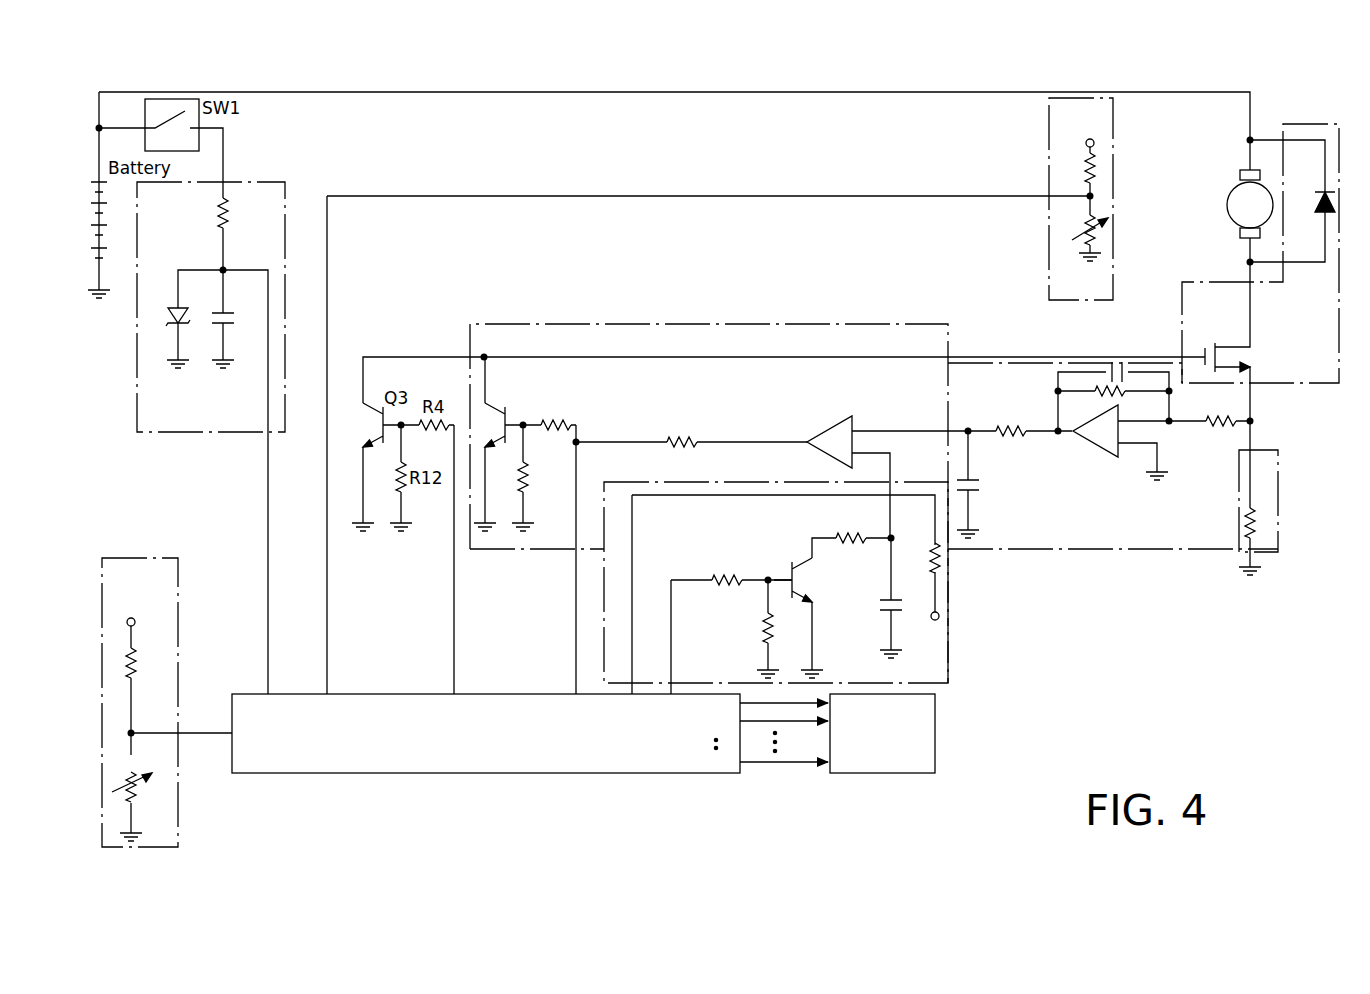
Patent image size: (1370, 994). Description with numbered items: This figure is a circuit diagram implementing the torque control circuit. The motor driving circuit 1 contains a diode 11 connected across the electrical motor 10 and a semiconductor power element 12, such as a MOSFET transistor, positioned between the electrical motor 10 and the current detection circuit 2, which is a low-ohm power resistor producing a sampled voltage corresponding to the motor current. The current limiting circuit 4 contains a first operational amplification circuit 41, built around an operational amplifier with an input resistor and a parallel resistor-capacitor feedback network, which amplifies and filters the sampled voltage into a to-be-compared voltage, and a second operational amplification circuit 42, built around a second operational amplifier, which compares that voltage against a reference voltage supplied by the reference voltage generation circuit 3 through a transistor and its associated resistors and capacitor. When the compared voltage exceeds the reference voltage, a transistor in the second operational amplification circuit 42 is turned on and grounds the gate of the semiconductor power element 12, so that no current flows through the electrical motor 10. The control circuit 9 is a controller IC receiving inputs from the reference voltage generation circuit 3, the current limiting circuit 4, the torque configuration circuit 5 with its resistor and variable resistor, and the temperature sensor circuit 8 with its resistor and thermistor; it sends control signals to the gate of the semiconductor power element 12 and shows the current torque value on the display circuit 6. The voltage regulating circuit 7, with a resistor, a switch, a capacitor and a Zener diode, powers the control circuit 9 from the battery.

The motor driving circuit 1 is at (1282, 372).
The current detection circuit 2 is at (1272, 468).
The reference voltage generation circuit 3 is at (932, 676).
The current limiting circuit 4 is at (967, 282).
The first operational amplification circuit 41 is at (1008, 383).
The second operational amplification circuit 42 is at (870, 340).
The torque configuration circuit 5 is at (168, 603).
The display circuit 6 is at (892, 757).
The voltage regulating circuit 7 is at (267, 190).
The temperature sensor circuit 8 is at (1064, 185).
The control circuit 9 is at (469, 763).
The electrical motor 10 is at (1230, 205).
The diode 11 is at (1323, 192).
The semiconductor power element 12 is at (1215, 343).